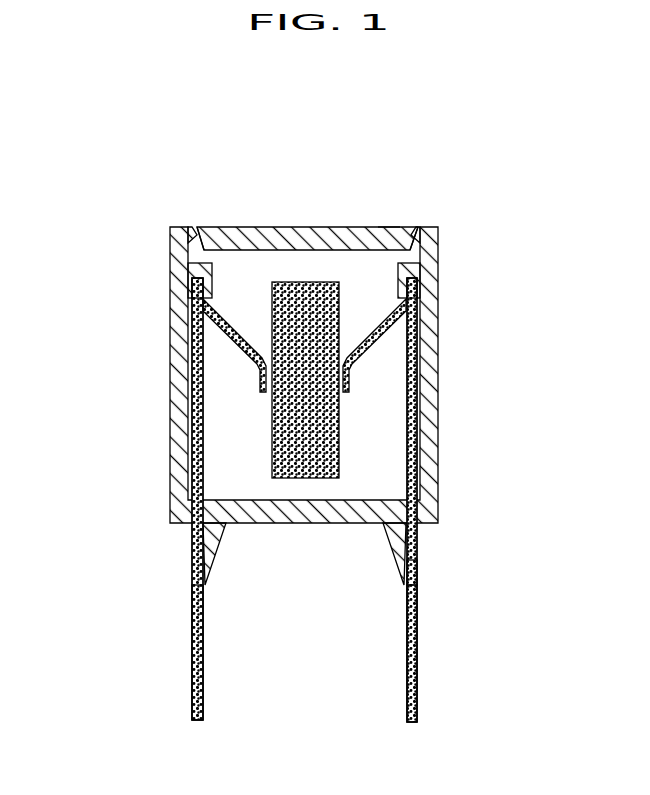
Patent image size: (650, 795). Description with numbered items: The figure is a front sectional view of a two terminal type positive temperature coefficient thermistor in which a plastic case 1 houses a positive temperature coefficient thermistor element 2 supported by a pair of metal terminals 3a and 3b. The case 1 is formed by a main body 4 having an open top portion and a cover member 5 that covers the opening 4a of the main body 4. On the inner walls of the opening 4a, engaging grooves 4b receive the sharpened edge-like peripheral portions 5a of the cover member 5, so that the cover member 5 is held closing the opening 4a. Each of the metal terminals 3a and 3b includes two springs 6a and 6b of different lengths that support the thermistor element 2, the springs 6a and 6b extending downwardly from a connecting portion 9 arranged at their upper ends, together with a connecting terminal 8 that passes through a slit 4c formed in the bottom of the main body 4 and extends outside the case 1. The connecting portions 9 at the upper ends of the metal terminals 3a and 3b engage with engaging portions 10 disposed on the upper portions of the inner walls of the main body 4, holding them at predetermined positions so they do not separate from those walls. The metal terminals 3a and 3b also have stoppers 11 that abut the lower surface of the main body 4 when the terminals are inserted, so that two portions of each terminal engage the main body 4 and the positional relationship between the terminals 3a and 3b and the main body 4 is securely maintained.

The case 1 is at (366, 375).
The positive temperature coefficient thermistor element 2 is at (272, 308).
The metal terminal 3a is at (192, 600).
The metal terminal 3b is at (418, 608).
The main body 4 is at (462, 318).
The opening 4a is at (386, 226).
The engaging groove 4b is at (178, 226).
The slit 4c is at (212, 552).
The cover member 5 is at (342, 226).
The peripheral portion 5a is at (197, 226).
The spring 6a is at (234, 345).
The spring 6b is at (374, 345).
The connecting terminal 8 is at (192, 657).
The connecting portion 9 is at (190, 286).
The engaging portion 10 is at (212, 270).
The stopper 11 is at (398, 568).